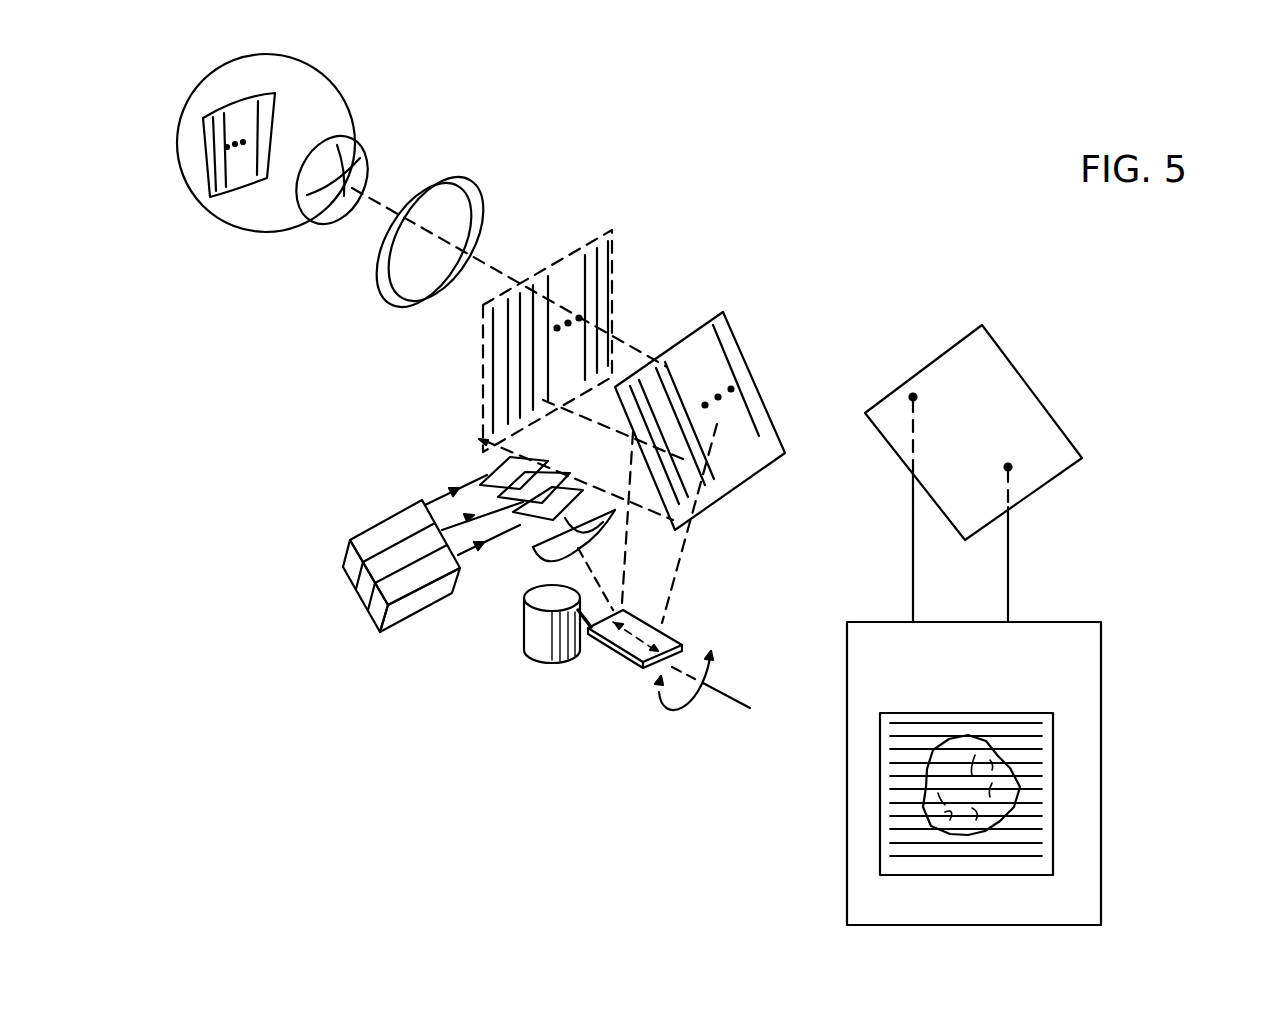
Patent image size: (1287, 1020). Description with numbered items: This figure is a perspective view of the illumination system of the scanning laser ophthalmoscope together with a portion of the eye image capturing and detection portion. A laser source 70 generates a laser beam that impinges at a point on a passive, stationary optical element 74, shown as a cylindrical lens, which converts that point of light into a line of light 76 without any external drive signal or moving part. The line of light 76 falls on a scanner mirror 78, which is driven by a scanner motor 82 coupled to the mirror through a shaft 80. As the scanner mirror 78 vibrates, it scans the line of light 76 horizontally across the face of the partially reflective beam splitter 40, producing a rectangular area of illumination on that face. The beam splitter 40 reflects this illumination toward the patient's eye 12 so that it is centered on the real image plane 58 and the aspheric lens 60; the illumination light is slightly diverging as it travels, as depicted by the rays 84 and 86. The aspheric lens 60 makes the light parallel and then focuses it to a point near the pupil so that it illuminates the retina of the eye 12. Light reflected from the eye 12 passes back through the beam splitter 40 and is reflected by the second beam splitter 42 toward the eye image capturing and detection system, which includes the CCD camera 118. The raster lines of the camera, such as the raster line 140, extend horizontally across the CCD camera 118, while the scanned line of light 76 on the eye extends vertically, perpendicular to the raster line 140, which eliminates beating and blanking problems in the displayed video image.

The patient's eye 12 is at (348, 102).
The aspheric lens 60 is at (488, 206).
The real image plane 58 is at (612, 253).
The ray 86 is at (622, 390).
The beam splitter 40 is at (737, 335).
The beam splitter 42 is at (1010, 382).
The ray 84 is at (530, 446).
The passive, stationary optical element 74 is at (613, 510).
The laser source 70 is at (462, 610).
The scanner motor 82 is at (547, 658).
The shaft 80 is at (588, 634).
The scanner mirror 78 is at (682, 642).
The line of light 76 is at (630, 665).
The raster line 140 is at (1027, 735).
The CCD camera 118 is at (1090, 738).